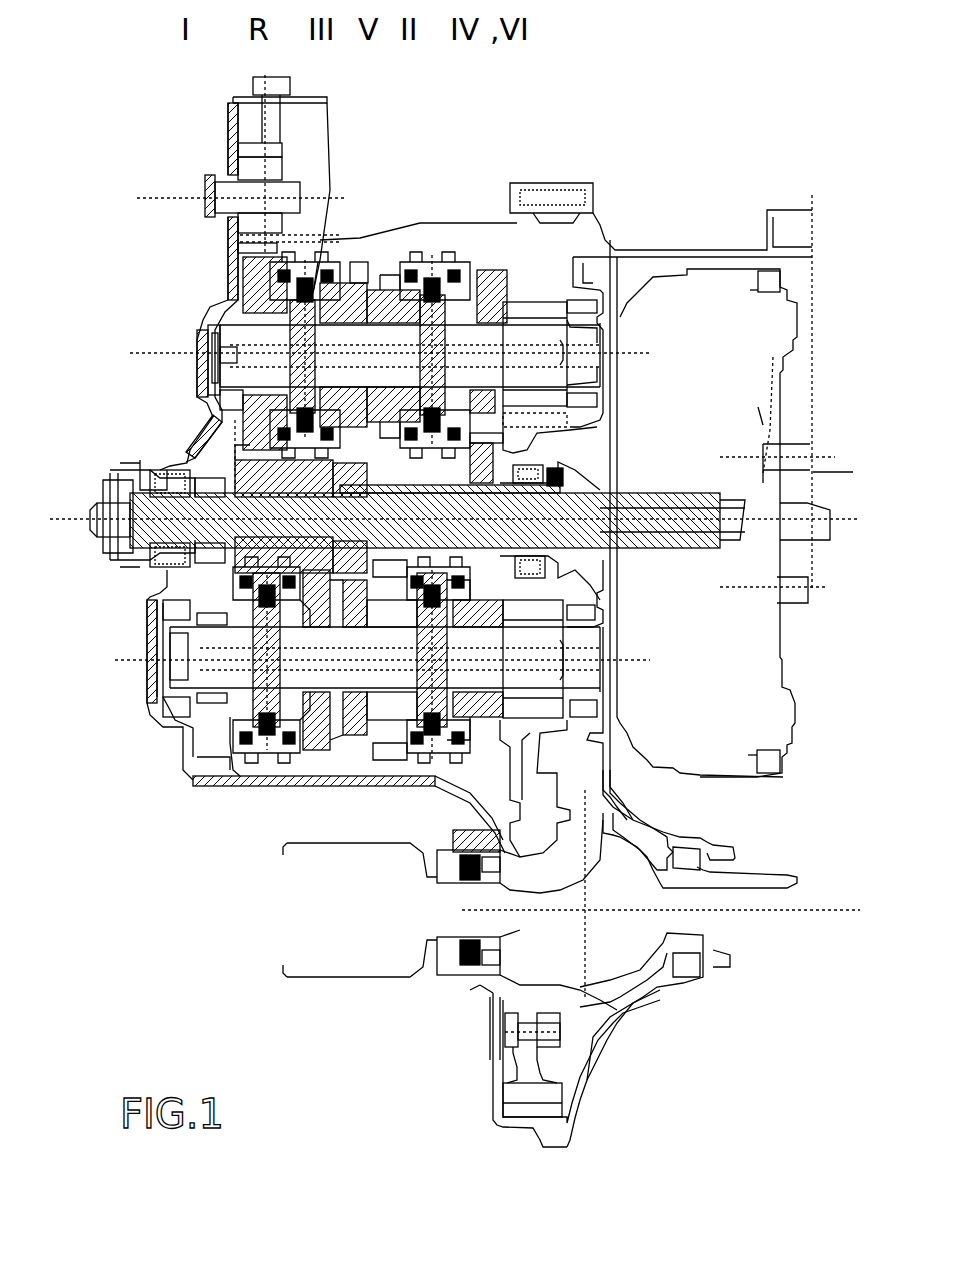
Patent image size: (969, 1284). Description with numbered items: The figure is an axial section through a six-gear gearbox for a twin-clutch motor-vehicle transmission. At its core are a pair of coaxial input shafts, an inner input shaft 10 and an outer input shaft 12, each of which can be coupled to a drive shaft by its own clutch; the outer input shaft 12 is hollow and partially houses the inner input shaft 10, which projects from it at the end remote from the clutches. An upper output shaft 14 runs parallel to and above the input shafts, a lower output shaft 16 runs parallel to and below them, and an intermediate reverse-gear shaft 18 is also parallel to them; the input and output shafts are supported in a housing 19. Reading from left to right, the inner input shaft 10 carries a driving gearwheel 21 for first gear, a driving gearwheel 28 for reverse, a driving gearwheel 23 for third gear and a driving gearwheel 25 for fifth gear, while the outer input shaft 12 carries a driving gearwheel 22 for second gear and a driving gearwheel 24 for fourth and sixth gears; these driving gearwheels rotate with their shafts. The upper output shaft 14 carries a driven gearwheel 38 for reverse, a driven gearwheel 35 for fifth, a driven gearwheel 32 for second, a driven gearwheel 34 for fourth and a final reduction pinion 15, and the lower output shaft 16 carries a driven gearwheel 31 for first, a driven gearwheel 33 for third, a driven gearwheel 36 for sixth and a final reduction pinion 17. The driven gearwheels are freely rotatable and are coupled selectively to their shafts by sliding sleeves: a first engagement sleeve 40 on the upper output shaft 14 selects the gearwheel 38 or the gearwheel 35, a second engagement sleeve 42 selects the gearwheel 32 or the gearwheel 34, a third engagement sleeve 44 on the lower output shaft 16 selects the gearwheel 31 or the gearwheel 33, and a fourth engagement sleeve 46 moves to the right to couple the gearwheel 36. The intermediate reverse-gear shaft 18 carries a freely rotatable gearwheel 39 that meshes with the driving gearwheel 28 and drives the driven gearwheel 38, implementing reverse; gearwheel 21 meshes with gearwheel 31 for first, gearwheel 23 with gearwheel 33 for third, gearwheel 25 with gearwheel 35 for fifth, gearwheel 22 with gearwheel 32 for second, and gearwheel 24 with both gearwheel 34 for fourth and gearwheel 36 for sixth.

The inner input shaft 10 is at (205, 485).
The outer input shaft 12 is at (585, 495).
The upper output shaft 14 is at (237, 337).
The final reduction pinion 15 is at (527, 305).
The lower output shaft 16 is at (183, 673).
The final reduction pinion 17 is at (573, 728).
The intermediate reverse-gear shaft 18 is at (220, 188).
The housing 19 is at (220, 290).
The driving gearwheel for the first gear 21 is at (237, 477).
The driving gearwheel for the second gear 22 is at (396, 628).
The driving gearwheel for the third gear 23 is at (237, 457).
The driving gearwheel for the fourth and sixth gears 24 is at (545, 470).
The driving gearwheel for the fifth gear 25 is at (353, 625).
The driving gearwheel for the reverse gear 28 is at (245, 552).
The driven gearwheel for the first gear 31 is at (183, 770).
The driven gearwheel for the second gear 32 is at (398, 290).
The driven gearwheel for the third gear 33 is at (320, 745).
The driven gearwheel for the fourth gear 34 is at (485, 275).
The driven gearwheel for the fifth gear 35 is at (357, 290).
The driven gearwheel for the sixth gear 36 is at (487, 718).
The driven gearwheel for the reverse gear 38 is at (243, 257).
The freely rotatable gearwheel 39 is at (247, 147).
The first engagement sleeve 40 is at (320, 260).
The second engagement sleeve 42 is at (443, 260).
The third engagement sleeve 44 is at (255, 757).
The fourth engagement sleeve 46 is at (442, 755).